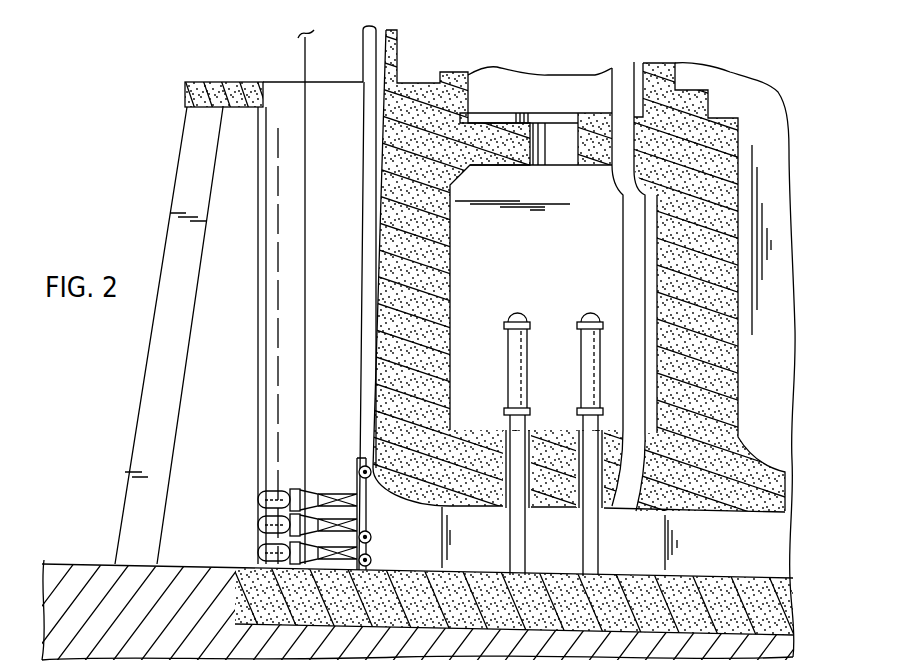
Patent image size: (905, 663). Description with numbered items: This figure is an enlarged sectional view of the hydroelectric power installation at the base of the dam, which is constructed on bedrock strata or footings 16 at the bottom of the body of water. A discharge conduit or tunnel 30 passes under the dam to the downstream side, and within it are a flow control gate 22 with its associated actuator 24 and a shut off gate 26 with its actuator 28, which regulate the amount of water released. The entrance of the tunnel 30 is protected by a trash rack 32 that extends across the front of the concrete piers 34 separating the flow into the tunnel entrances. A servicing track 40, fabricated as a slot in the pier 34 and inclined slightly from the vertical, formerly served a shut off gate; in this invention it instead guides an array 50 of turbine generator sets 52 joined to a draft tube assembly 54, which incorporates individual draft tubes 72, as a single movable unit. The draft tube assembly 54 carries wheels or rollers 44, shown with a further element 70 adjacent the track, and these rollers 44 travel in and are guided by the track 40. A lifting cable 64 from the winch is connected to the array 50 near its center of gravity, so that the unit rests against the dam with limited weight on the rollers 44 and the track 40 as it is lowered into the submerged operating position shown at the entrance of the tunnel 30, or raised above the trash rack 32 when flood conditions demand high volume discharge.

The bedrock strata or footings 16 is at (780, 648).
The control gate 22 is at (590, 520).
The actuator 24 is at (580, 340).
The shut off gate 26 is at (510, 521).
The actuator 28 is at (506, 340).
The discharge conduit or tunnel 30 is at (730, 550).
The trash rack 32 is at (172, 200).
The pier 34 is at (338, 213).
The servicing track 40 is at (382, 64).
The rollers 44 is at (360, 462).
The array of turbine generator sets and draft tube assembly 50 is at (280, 489).
The turbine generator set 52 is at (275, 491).
The draft tube assembly 54 is at (320, 489).
The lifting cable 64 is at (304, 58).
The roller 70 is at (359, 466).
The draft tube 72 is at (341, 490).